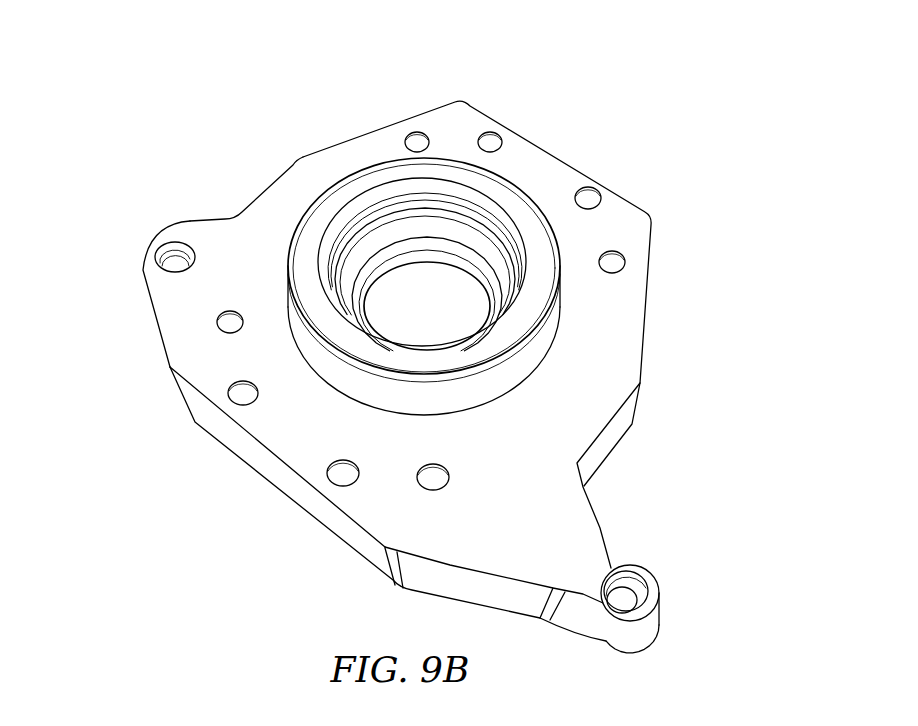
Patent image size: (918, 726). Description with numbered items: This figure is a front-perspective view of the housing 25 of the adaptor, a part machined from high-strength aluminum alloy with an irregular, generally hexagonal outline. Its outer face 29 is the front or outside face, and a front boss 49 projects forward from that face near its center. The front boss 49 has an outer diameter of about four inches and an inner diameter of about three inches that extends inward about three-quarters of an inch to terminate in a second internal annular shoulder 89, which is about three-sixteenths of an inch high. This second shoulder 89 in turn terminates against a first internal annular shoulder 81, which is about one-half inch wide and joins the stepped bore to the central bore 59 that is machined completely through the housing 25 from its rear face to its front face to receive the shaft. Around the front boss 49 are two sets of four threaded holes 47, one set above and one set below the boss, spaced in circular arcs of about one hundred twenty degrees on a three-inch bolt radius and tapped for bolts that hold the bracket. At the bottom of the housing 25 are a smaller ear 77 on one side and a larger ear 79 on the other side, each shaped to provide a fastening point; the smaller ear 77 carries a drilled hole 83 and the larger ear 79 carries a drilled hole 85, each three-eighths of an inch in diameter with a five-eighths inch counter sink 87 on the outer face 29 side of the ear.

The housing 25 is at (660, 106).
The outer face 29 is at (523, 463).
The threaded holes 47 is at (487, 145).
The front boss 49 is at (540, 273).
The central bore 59 is at (414, 318).
The smaller ear 77 is at (178, 300).
The larger ear 79 is at (528, 550).
The first internal annular shoulder 81 is at (485, 263).
The drilled hole 83 is at (180, 268).
The drilled hole 85 is at (620, 601).
The counter sink 87 is at (650, 598).
The second internal annular shoulder 89 is at (375, 197).